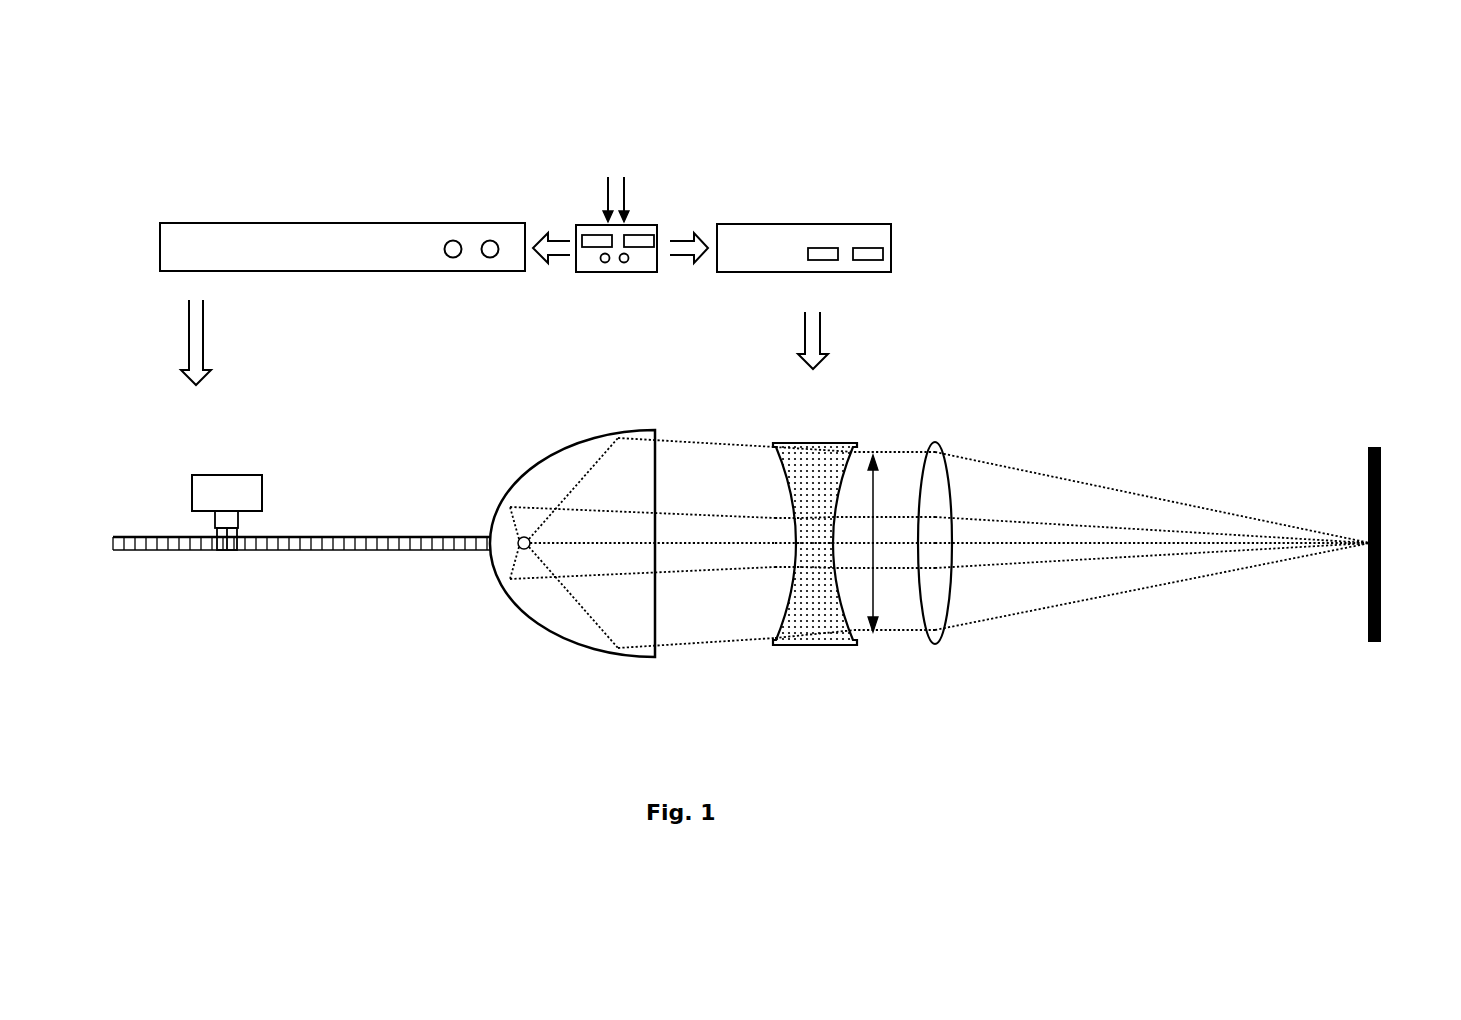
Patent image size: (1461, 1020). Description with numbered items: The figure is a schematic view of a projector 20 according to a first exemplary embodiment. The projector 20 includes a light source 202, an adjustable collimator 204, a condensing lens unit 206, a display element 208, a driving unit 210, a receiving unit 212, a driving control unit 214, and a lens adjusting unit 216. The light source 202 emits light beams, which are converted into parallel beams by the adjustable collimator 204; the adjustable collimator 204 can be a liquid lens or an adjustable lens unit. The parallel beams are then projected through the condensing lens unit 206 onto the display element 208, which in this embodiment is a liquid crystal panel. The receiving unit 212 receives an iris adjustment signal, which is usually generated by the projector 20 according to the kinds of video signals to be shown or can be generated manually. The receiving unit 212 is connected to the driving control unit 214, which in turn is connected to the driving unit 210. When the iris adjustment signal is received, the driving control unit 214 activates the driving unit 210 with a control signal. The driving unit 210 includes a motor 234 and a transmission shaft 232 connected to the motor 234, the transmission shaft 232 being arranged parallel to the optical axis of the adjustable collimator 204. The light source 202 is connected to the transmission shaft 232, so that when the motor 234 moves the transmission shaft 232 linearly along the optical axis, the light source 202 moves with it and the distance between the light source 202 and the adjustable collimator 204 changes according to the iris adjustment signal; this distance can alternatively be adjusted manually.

The projector 20 is at (1070, 190).
The light source 202 is at (543, 472).
The adjustable collimator 204 is at (840, 442).
The condensing lens unit 206 is at (935, 445).
The display element 208 is at (1383, 452).
The driving unit 210 is at (374, 561).
The receiving unit 212 is at (636, 224).
The driving control unit 214 is at (432, 222).
The lens adjusting unit 216 is at (815, 224).
The transmission shaft 232 is at (425, 551).
The motor 234 is at (205, 476).